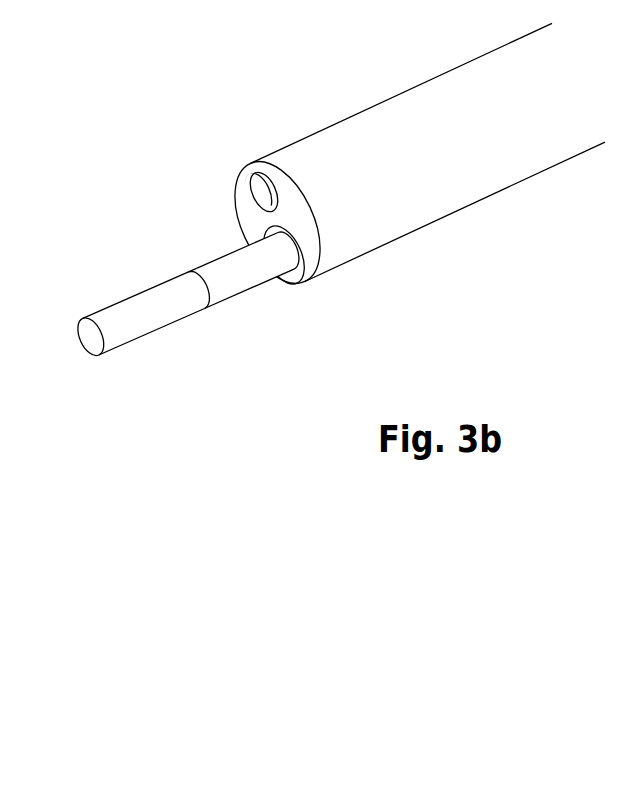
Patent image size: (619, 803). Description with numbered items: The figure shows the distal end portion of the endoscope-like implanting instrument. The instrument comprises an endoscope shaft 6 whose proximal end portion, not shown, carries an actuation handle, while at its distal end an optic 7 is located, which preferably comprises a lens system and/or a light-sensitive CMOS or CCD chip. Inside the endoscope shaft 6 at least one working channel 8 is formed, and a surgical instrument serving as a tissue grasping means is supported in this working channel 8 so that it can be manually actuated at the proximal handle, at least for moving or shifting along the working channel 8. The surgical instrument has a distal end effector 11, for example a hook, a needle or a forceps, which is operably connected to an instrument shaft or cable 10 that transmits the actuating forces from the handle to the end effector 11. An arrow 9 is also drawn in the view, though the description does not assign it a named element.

The endoscope shaft 6 is at (488, 175).
The optic 7 is at (258, 186).
The working channel 8 is at (306, 240).
The viewing direction arrow 9 is at (192, 212).
The instrument shaft or cable 10 is at (250, 270).
The distal end effector 11 is at (143, 317).